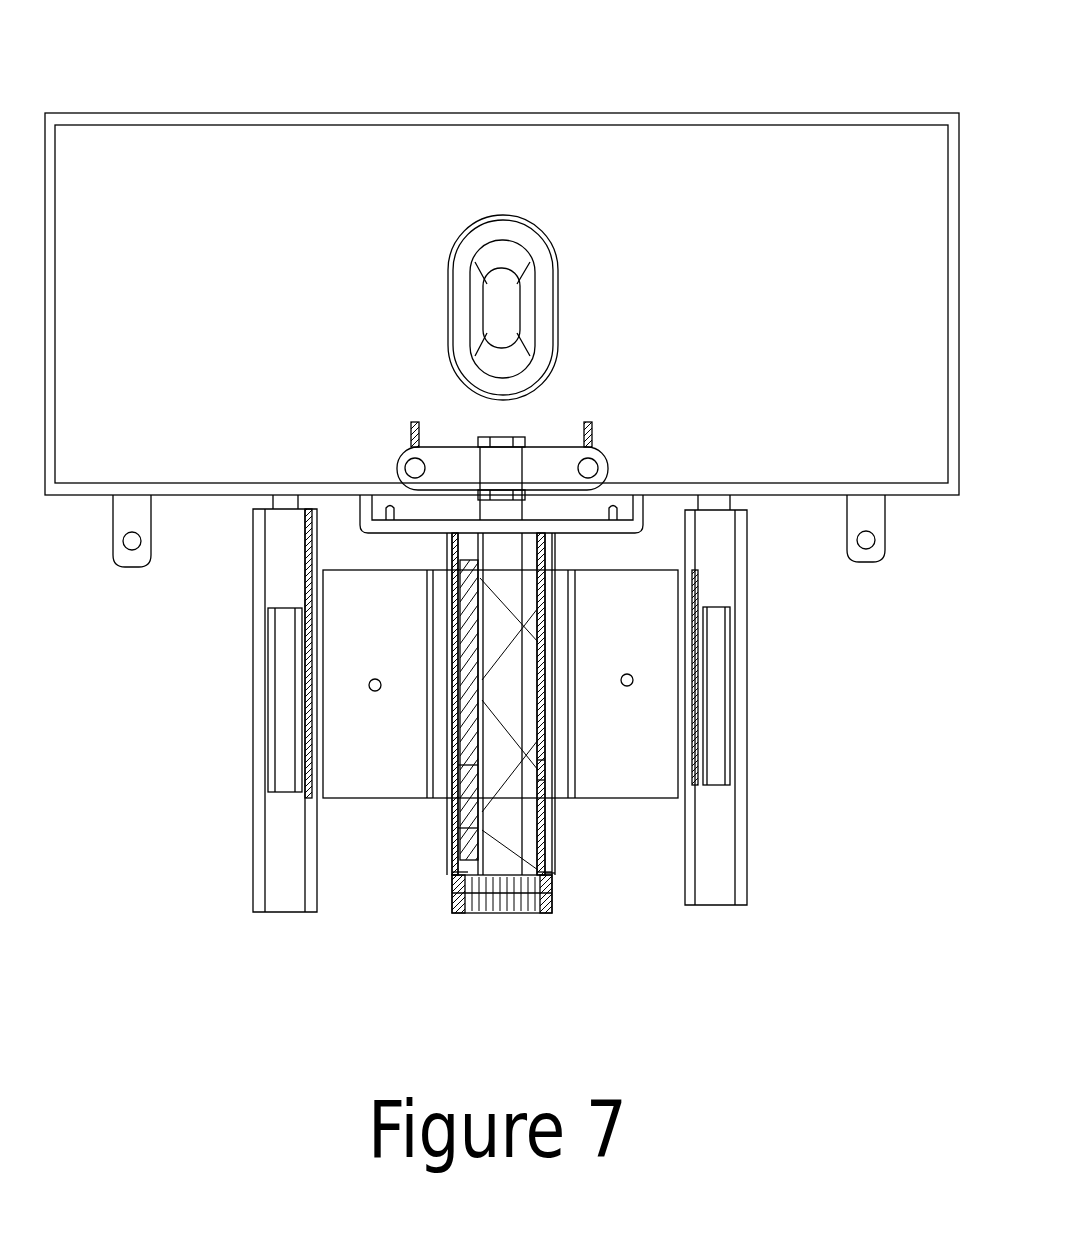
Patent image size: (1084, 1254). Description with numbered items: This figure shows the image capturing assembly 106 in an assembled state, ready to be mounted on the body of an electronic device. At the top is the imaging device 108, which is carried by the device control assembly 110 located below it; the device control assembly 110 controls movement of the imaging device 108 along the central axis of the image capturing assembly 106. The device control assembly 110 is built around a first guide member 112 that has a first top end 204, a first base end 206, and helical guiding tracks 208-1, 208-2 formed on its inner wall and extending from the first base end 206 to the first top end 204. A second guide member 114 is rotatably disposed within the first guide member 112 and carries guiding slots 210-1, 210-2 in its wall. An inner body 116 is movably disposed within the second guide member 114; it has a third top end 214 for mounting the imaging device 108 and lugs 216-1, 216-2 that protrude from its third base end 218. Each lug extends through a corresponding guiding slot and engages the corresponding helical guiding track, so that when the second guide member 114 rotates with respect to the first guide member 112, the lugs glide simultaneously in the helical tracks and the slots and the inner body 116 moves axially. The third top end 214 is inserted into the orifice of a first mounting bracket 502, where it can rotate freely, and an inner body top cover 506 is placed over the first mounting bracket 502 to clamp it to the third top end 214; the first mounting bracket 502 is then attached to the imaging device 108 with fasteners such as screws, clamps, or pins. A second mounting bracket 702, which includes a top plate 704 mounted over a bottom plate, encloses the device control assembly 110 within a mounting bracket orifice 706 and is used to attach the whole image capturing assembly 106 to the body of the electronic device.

The image capturing assembly 106 is at (465, 45).
The imaging device 108 is at (786, 125).
The device control assembly 110 is at (498, 995).
The first guide member 112 is at (460, 828).
The second guide member 114 is at (540, 766).
The inner body 116 is at (540, 778).
The first top end 204 is at (552, 535).
The first base end 206 is at (552, 873).
The helical guiding track 208-1 is at (532, 608).
The helical guiding track 208-2 is at (467, 567).
The guiding slot 210-1 is at (540, 715).
The guiding slot 210-2 is at (470, 717).
The third top end 214 is at (478, 495).
The lug 216-1 is at (550, 873).
The lug 216-2 is at (462, 877).
The third base end 218 is at (548, 912).
The first mounting bracket 502 is at (565, 450).
The inner body top cover 506 is at (526, 438).
The second mounting bracket 702 is at (738, 883).
The top plate 704 is at (275, 892).
The mounting bracket orifice 706 is at (460, 767).